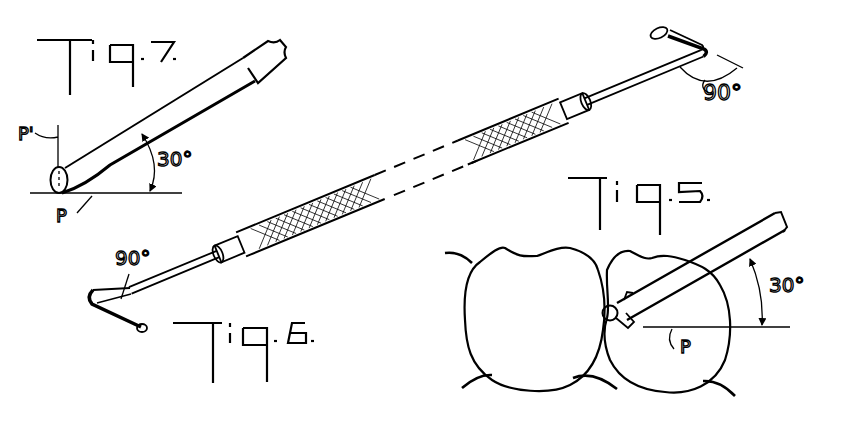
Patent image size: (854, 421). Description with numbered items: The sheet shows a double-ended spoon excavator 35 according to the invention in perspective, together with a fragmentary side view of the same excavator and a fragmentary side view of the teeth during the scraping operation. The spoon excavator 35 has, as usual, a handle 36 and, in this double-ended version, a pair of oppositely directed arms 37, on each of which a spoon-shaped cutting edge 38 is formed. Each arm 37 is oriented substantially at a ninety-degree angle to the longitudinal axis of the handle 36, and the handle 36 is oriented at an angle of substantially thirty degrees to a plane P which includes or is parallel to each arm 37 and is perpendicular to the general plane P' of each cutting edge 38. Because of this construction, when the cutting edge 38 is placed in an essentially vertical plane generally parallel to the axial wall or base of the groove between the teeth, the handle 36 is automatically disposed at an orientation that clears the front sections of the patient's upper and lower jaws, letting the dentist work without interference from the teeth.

In FIG. 6, the spoon excavator 35 is at (402, 193).
In FIG. 7, the handle 36 is at (223, 87).
In FIG. 6, the handle 36 is at (338, 193).
In FIG. 5, the handle 36 is at (767, 225).
In FIG. 6, the arm 37 is at (100, 313).
In FIG. 6, the spoon-shaped cutting edge 38 is at (133, 336).
In FIG. 5, the spoon-shaped cutting edge 38 is at (603, 312).